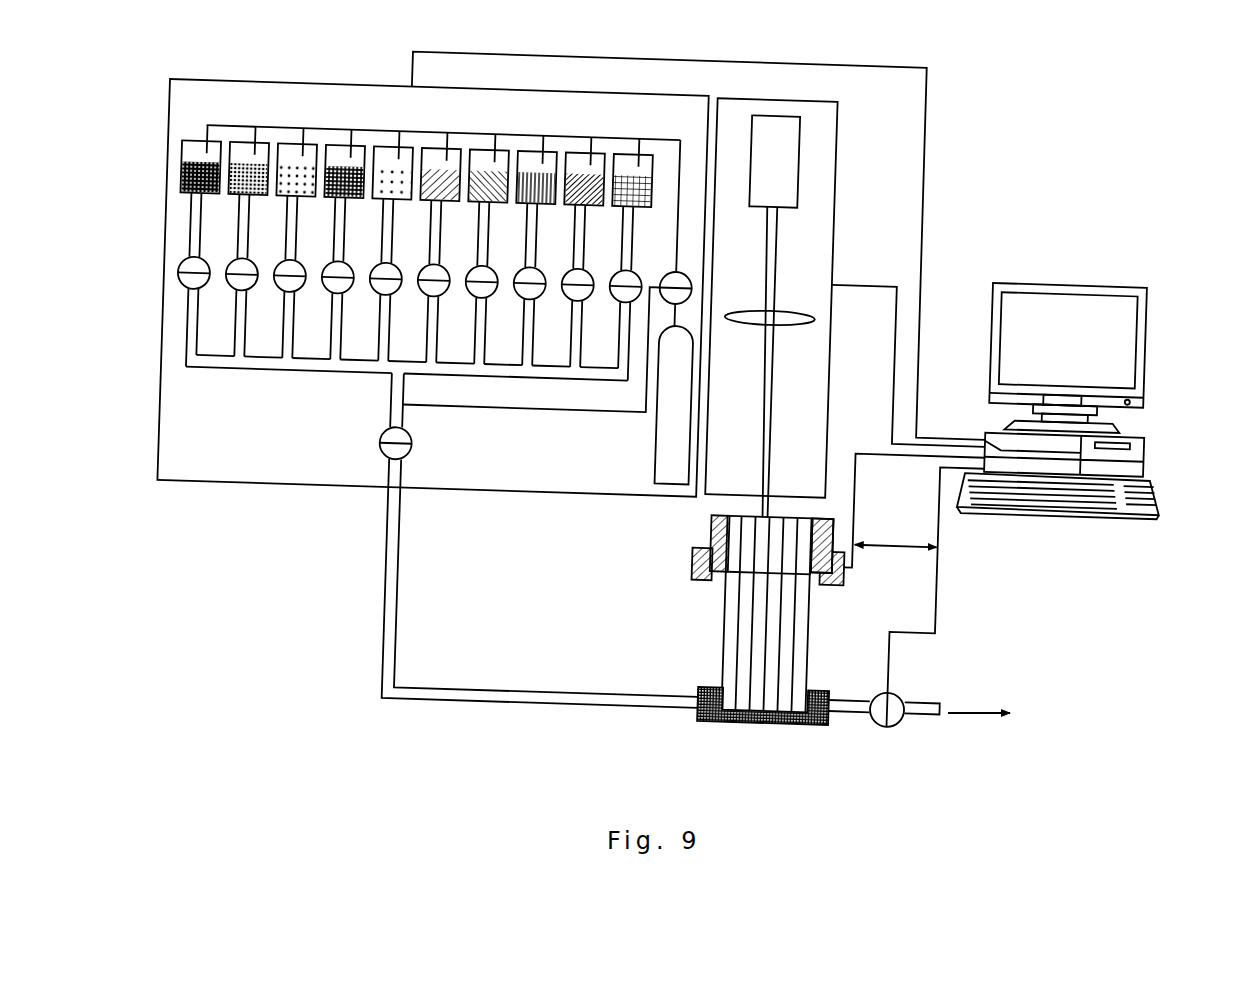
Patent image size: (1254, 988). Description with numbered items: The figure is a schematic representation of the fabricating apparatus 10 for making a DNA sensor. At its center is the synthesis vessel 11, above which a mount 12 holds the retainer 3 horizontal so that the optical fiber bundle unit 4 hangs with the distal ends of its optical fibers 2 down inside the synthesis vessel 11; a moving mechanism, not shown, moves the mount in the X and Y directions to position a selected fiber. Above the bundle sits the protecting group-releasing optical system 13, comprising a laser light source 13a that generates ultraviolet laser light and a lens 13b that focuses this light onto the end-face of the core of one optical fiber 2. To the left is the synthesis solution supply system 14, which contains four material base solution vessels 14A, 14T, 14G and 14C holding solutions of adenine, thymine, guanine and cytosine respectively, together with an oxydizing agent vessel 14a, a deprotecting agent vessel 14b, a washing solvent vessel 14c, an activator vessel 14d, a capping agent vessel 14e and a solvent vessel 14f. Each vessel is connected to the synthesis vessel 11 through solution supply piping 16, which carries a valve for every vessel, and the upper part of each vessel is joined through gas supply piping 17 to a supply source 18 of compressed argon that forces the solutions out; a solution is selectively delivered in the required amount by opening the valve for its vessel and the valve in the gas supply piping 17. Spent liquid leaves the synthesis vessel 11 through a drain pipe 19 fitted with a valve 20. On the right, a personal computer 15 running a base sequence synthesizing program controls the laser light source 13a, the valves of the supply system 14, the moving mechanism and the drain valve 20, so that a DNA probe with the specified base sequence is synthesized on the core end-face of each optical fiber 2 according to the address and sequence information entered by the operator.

The fabricating apparatus 10 is at (315, 61).
The synthesis solution supply system 14 is at (166, 215).
The material base solution vessel 14A is at (197, 148).
The material base solution vessel 14G is at (250, 150).
The material base solution vessel 14C is at (298, 152).
The material base solution vessel 14T is at (347, 153).
The oxydizing agent vessel 14a is at (395, 154).
The deprotecting agent vessel 14b is at (443, 155).
The washing solvent vessel 14c is at (491, 156).
The activator vessel 14d is at (540, 157).
The capping agent vessel 14e is at (588, 158).
The solvent vessel 14f is at (637, 160).
The gas supply piping 17 is at (682, 190).
The supply source of compressed low-reactivity gas 18 is at (658, 454).
The solution supply piping 16 is at (388, 553).
The protecting group-releasing optical system 13 is at (838, 207).
The laser light source 13a is at (800, 198).
The lens 13b is at (792, 316).
The mount 12 is at (694, 561).
The retainer 3 is at (712, 524).
The optical fiber bundle unit 4 is at (711, 604).
The optical fiber 2 is at (810, 630).
The synthesis vessel 11 is at (749, 728).
The drain pipe 19 is at (844, 722).
The valve 20 is at (893, 726).
The personal computer 15 is at (1156, 460).